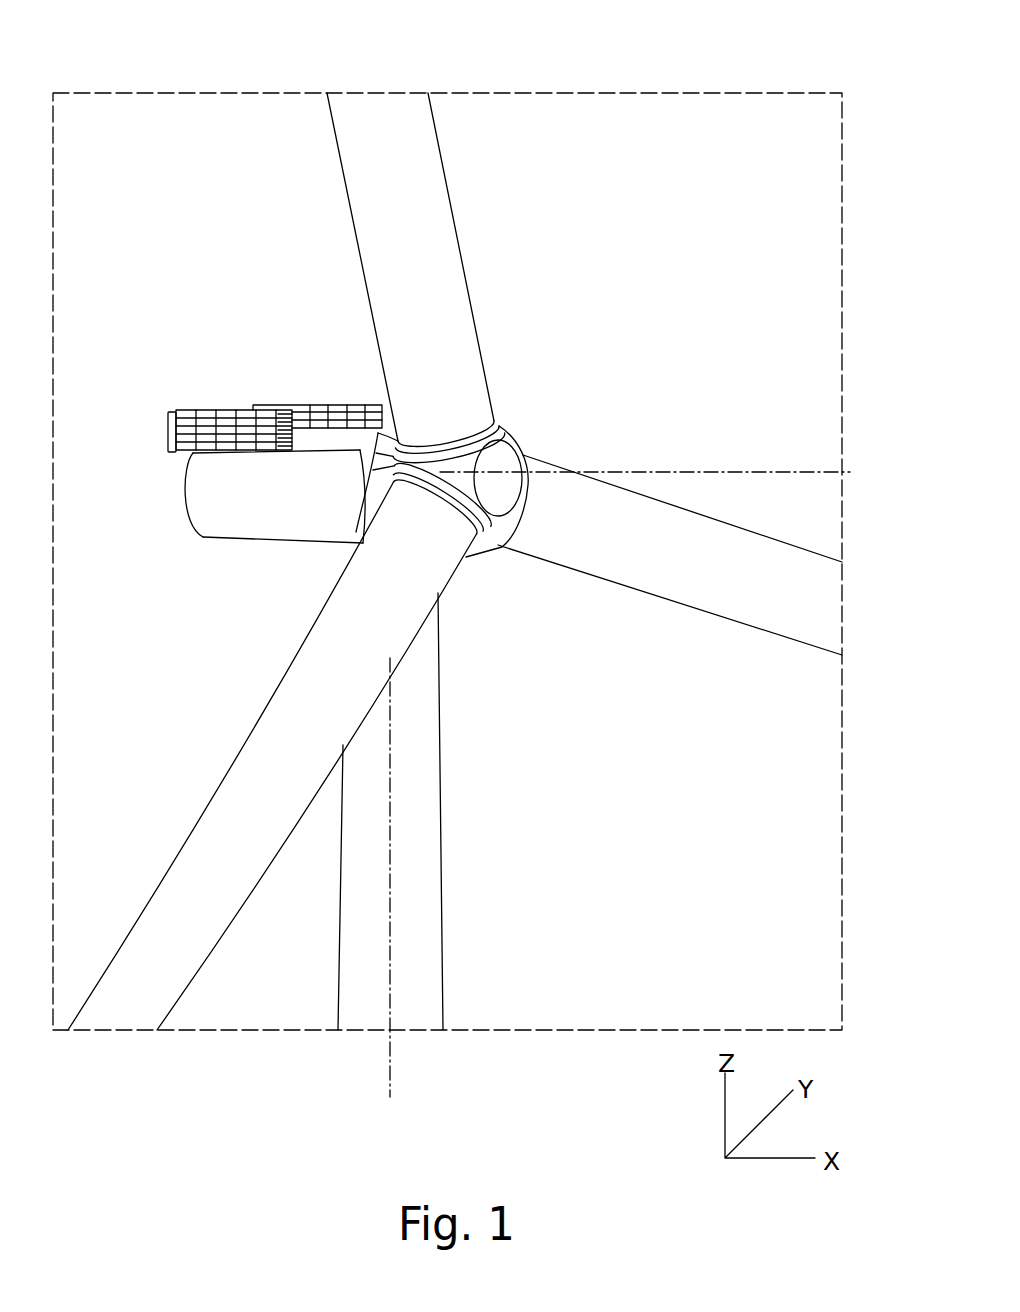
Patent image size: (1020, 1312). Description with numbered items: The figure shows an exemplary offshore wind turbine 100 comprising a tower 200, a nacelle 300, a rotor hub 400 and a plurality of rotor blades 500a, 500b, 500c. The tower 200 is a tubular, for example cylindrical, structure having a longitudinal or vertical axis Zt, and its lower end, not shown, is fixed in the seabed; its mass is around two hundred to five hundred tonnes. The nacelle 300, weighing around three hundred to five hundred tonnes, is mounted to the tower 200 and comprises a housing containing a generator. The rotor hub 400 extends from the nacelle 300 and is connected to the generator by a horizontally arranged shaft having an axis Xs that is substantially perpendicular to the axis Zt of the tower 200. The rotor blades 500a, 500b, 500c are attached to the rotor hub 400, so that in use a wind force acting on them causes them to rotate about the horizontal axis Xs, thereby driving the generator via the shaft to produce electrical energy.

The offshore wind turbine 100 is at (546, 232).
The tower 200 is at (417, 850).
The nacelle 300 is at (216, 384).
The rotor hub 400 is at (498, 462).
The rotor blade 500a is at (385, 115).
The rotor blade 500b is at (681, 582).
The rotor blade 500c is at (195, 942).